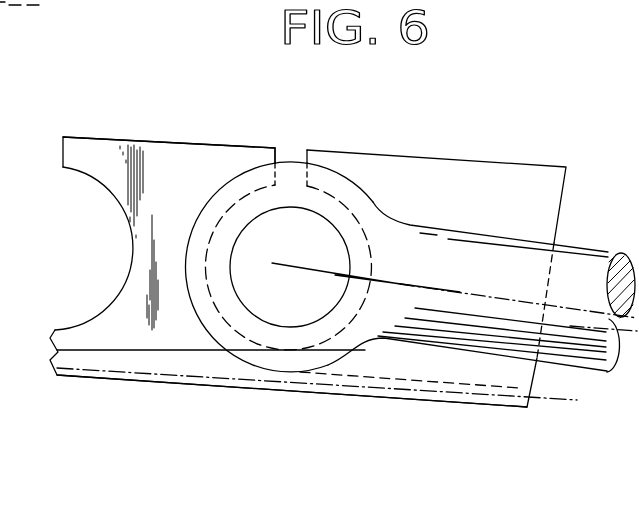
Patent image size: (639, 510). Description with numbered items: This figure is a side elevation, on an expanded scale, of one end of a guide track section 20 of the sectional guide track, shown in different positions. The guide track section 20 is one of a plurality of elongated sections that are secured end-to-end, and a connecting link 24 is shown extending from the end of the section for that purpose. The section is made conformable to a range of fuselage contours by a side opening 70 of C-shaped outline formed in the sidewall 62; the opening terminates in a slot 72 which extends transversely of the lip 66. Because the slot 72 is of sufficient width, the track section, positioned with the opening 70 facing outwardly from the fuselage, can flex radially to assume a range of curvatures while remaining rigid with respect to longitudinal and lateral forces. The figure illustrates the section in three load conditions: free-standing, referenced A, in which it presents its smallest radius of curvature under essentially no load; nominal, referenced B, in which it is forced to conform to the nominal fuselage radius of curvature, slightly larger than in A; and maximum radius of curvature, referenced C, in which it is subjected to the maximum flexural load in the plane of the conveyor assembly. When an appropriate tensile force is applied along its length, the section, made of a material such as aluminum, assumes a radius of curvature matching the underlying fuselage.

The guide track section 20 is at (416, 144).
The connecting link 24 is at (590, 262).
The sidewall 62 is at (170, 157).
The lip 66 is at (203, 143).
The side opening 70 is at (82, 244).
The slot 72 is at (293, 155).
The free-standing load condition A is at (453, 402).
The nominal load condition B is at (548, 400).
The maximum radius of curvature condition C is at (493, 387).